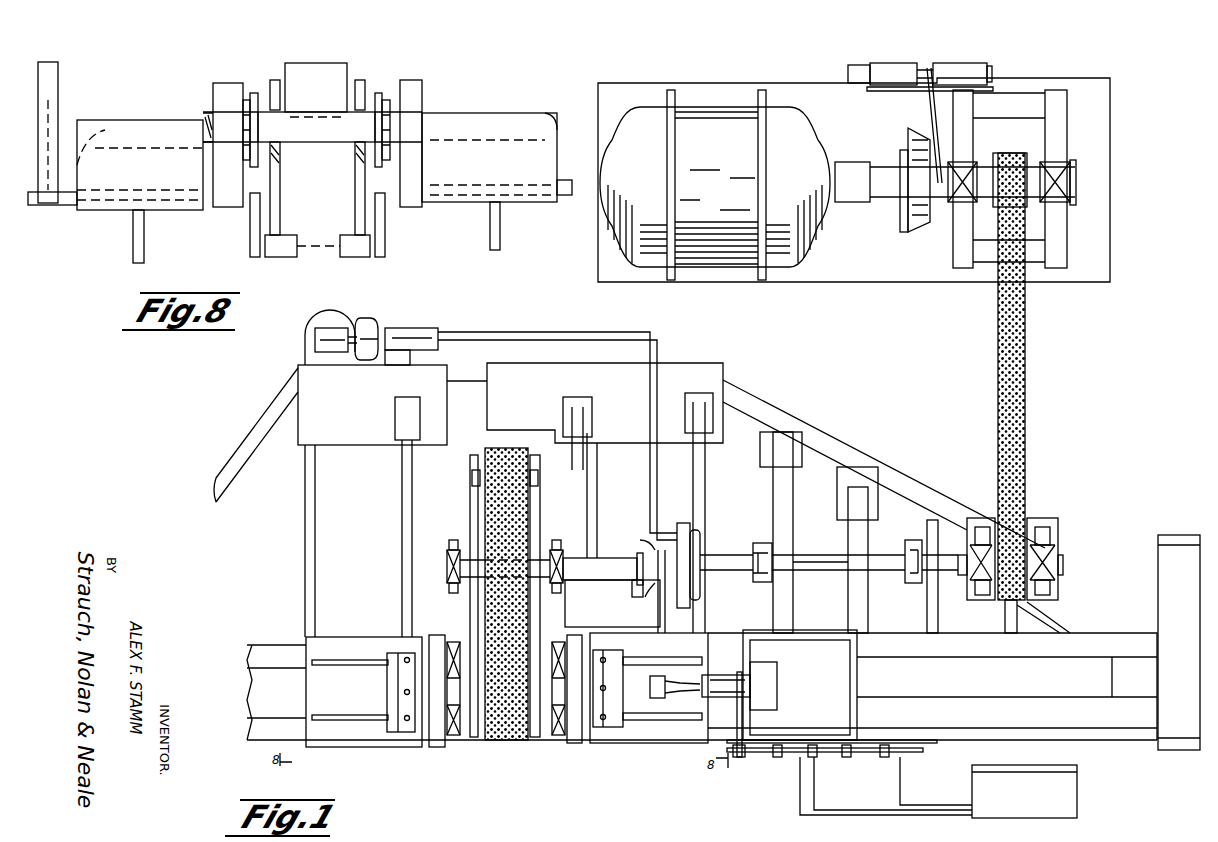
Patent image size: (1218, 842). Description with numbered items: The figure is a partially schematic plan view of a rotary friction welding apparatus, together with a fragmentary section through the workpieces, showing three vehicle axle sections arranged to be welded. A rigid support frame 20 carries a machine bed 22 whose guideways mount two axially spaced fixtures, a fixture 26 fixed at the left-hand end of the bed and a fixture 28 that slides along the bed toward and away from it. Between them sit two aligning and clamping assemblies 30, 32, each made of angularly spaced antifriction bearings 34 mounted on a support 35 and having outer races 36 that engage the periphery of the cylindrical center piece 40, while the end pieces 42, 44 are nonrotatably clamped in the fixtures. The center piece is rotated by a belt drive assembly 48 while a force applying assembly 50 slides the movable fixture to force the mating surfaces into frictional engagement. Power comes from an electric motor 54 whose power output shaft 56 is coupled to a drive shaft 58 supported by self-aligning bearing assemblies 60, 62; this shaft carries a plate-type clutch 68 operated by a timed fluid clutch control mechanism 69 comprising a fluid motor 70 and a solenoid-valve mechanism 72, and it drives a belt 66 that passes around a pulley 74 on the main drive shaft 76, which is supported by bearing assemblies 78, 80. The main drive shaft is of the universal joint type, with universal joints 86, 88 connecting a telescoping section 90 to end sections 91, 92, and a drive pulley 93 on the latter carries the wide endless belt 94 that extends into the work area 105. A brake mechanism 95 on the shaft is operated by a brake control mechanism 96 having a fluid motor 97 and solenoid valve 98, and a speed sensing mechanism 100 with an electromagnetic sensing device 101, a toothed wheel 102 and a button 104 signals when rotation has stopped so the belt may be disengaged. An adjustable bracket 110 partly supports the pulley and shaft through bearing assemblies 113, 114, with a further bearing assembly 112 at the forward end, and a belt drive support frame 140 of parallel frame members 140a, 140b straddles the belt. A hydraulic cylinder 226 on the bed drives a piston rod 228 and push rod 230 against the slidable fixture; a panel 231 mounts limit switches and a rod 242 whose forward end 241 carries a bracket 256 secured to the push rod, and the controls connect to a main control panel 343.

In FIG. 8, the support frame 20 is at (502, 240).
In FIG. 1, the support frame 20 is at (248, 432).
In FIG. 8, the machine bed 22 is at (567, 183).
In FIG. 1, the machine bed 22 is at (292, 780).
In FIG. 8, the fixture 26 is at (158, 212).
In FIG. 1, the fixture 26 is at (388, 747).
In FIG. 8, the fixture 28 is at (458, 205).
In FIG. 1, the fixture 28 is at (628, 745).
In FIG. 8, the aligning and clamping assembly 30 is at (254, 93).
In FIG. 1, the aligning and clamping assembly 30 is at (446, 748).
In FIG. 8, the aligning and clamping assembly 32 is at (384, 95).
In FIG. 1, the aligning and clamping assembly 32 is at (562, 745).
In FIG. 1, the antifriction bearings 34 is at (452, 642).
In FIG. 1, the support 35 is at (444, 740).
In FIG. 1, the outer races 36 is at (386, 689).
In FIG. 8, the center piece 40 is at (352, 118).
In FIG. 8, the end piece 42 is at (213, 110).
In FIG. 8, the end piece 44 is at (423, 104).
In FIG. 1, the belt drive assembly 48 is at (505, 447).
In FIG. 1, the force applying assembly 50 is at (710, 675).
In FIG. 1, the electric motor 54 is at (715, 164).
In FIG. 1, the power output shaft 56 is at (838, 149).
In FIG. 1, the drive shaft 58 is at (900, 172).
In FIG. 1, the antifriction bearing assembly 60 is at (974, 160).
In FIG. 1, the antifriction bearing assembly 62 is at (1072, 165).
In FIG. 1, the belt 66 is at (1026, 330).
In FIG. 1, the clutch 68 is at (919, 193).
In FIG. 1, the clutch control mechanism 69 is at (880, 63).
In FIG. 1, the fluid motor 70 is at (905, 63).
In FIG. 1, the solenoid-valve mechanism 72 is at (960, 63).
In FIG. 1, the pulley 74 is at (990, 516).
In FIG. 1, the main drive shaft 76 is at (816, 550).
In FIG. 1, the antifriction bearing assembly 78 is at (978, 600).
In FIG. 1, the antifriction bearing assembly 80 is at (1060, 545).
In FIG. 1, the universal joint 86 is at (918, 585).
In FIG. 1, the universal joint 88 is at (735, 596).
In FIG. 1, the telescoping section 90 is at (835, 571).
In FIG. 1, the end section 91 is at (932, 540).
In FIG. 1, the end section 92 is at (722, 555).
In FIG. 1, the drive pulley 93 is at (535, 530).
In FIG. 8, the endless belt 94 is at (321, 64).
In FIG. 1, the endless belt 94 is at (488, 505).
In FIG. 1, the brake mechanism 95 is at (688, 524).
In FIG. 1, the brake control mechanism 96 is at (388, 326).
In FIG. 1, the fluid motor 97 is at (430, 328).
In FIG. 1, the solenoid valve 98 is at (335, 328).
In FIG. 1, the speed sensing mechanism 100 is at (620, 608).
In FIG. 1, the sensing device 101 is at (637, 599).
In FIG. 1, the toothed wheel 102 is at (637, 560).
In FIG. 1, the button 104 is at (640, 540).
In FIG. 1, the work area 105 is at (512, 742).
In FIG. 1, the adjustable bracket 110 is at (578, 605).
In FIG. 1, the antifriction bearing assembly 112 is at (448, 552).
In FIG. 1, the antifriction bearing assembly 113 is at (564, 555).
In FIG. 1, the antifriction bearing assembly 114 is at (643, 556).
In FIG. 8, the belt drive support frame 140 is at (270, 228).
In FIG. 1, the belt drive support frame 140 is at (460, 516).
In FIG. 8, the frame member 140a is at (280, 190).
In FIG. 1, the frame member 140a is at (472, 478).
In FIG. 8, the frame member 140b is at (355, 214).
In FIG. 1, the frame member 140b is at (540, 478).
In FIG. 1, the hydraulic cylinder 226 is at (788, 705).
In FIG. 1, the piston rod 228 is at (735, 676).
In FIG. 1, the push rod 230 is at (700, 695).
In FIG. 1, the panel 231 is at (940, 742).
In FIG. 1, the forward end 241 is at (738, 758).
In FIG. 1, the rod 242 is at (746, 758).
In FIG. 1, the bracket 256 is at (770, 705).
In FIG. 1, the main control panel 343 is at (1077, 800).